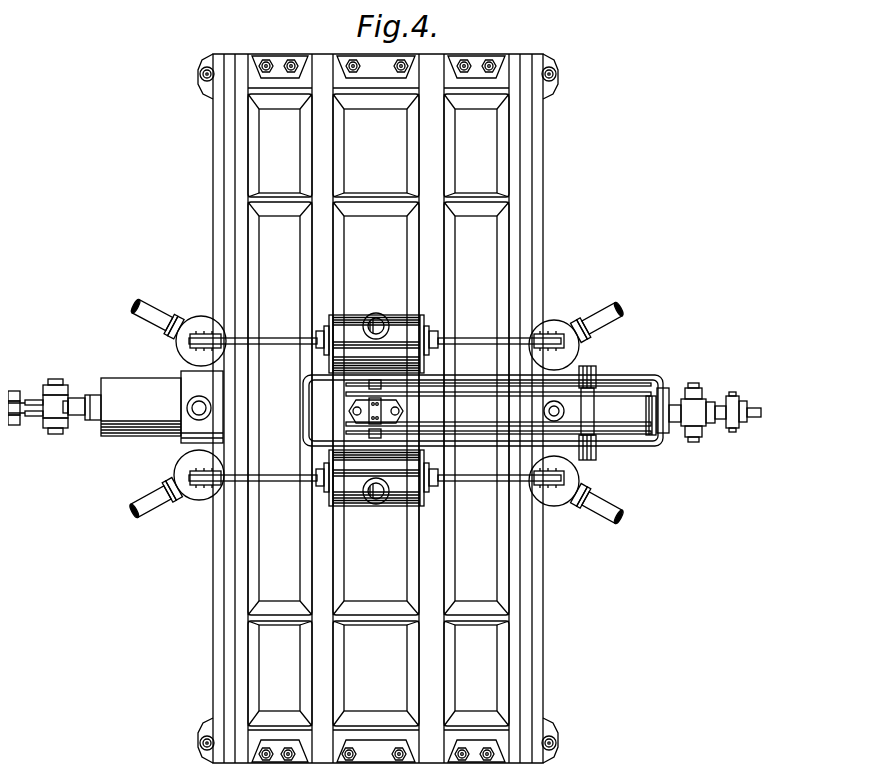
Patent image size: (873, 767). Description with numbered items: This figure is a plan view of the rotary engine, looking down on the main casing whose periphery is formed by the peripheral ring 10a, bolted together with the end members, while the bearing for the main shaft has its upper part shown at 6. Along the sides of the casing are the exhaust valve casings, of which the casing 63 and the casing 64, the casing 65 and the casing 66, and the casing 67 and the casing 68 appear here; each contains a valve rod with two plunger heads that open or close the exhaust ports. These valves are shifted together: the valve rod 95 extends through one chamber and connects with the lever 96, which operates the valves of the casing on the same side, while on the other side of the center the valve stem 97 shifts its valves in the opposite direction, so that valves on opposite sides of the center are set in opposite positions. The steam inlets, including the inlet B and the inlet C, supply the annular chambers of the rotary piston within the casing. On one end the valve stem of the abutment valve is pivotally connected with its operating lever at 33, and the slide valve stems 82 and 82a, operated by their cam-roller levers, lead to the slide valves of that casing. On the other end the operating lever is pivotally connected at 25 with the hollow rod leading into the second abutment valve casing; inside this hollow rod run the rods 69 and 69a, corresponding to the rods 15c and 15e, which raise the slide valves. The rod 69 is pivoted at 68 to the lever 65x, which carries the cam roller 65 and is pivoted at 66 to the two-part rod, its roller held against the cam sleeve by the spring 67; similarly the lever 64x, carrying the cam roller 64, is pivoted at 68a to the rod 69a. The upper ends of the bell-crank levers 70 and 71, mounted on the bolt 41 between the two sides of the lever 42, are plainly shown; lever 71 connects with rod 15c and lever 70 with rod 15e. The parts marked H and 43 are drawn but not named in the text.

The peripheral ring 10a is at (348, 580).
The upper part of the bearing 6 is at (186, 742).
The pipe connection 63 is at (204, 488).
The cam roller 64 is at (191, 311).
The cam roller 65 is at (359, 500).
The pivotal connection 66 is at (348, 316).
The spring 67 is at (565, 492).
The pivotal connection 68 is at (547, 318).
The valve rod 95 is at (286, 472).
The lever 96 is at (192, 452).
The valve stem 97 is at (284, 331).
The housing H is at (185, 396).
The pivotal connection 33 is at (55, 428).
The stem 82a is at (32, 388).
The stem 82 is at (30, 411).
The steam inlet B is at (455, 405).
The bell-crank lever 70 is at (346, 387).
The bell-crank lever 71 is at (345, 418).
The rod 15c is at (612, 762).
The rod 15e is at (400, 411).
The steam inlet C is at (547, 408).
The bolt 41 is at (590, 358).
The lever 42 is at (603, 380).
The block 43 is at (638, 438).
The pivotal connection 25 is at (689, 436).
The rod 69a is at (720, 394).
The rod 69 is at (720, 422).
The pivotal connection 68a is at (726, 388).
The lever 64x is at (739, 387).
The lever 65x is at (742, 420).